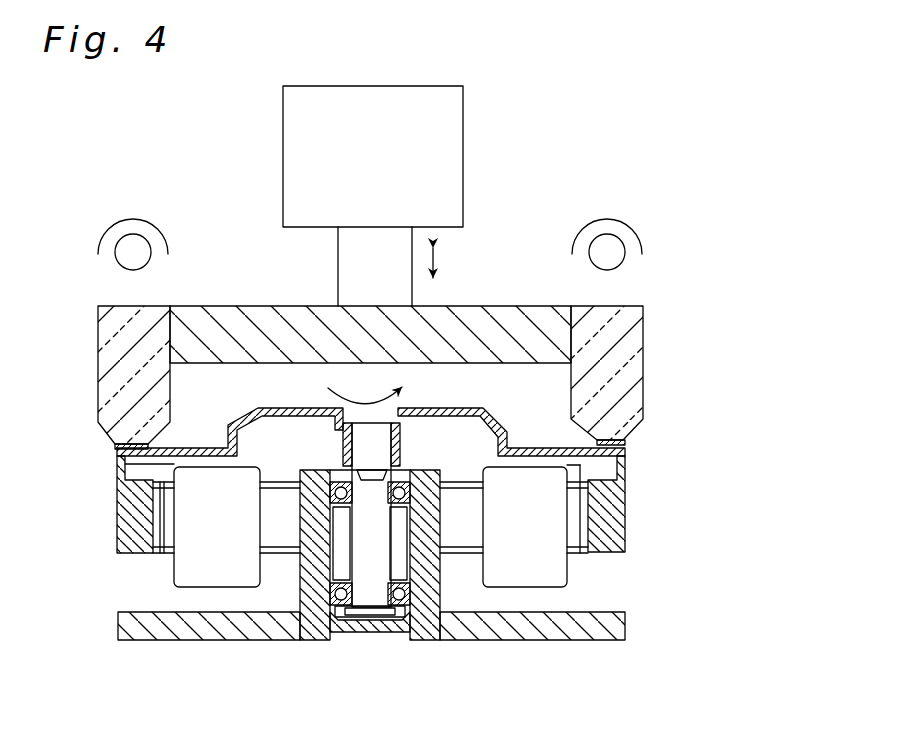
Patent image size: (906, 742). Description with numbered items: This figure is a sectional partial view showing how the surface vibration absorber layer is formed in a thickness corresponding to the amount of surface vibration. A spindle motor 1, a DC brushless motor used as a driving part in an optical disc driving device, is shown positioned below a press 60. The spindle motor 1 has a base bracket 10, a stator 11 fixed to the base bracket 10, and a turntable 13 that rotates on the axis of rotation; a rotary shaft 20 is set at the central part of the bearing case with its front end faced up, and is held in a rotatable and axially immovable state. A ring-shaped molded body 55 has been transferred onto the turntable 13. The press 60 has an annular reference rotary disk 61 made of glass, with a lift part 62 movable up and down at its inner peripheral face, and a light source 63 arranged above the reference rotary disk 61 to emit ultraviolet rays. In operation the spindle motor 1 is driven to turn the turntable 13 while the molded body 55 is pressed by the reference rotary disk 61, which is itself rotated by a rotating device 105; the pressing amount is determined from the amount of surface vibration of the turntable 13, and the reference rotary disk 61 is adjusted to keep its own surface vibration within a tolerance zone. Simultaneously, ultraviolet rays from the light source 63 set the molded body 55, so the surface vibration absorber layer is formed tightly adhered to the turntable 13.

The rotating device 105 is at (283, 152).
The press 60 is at (472, 276).
The lift part 62 is at (520, 307).
The reference rotary disk 61 is at (623, 307).
The light source 63 is at (630, 226).
The ring-shaped molded body 55 is at (117, 447).
The turntable 13 is at (533, 448).
The spindle motor 1 is at (634, 492).
The stator 11 is at (575, 575).
The base bracket 10 is at (610, 628).
The rotary shaft 20 is at (377, 592).